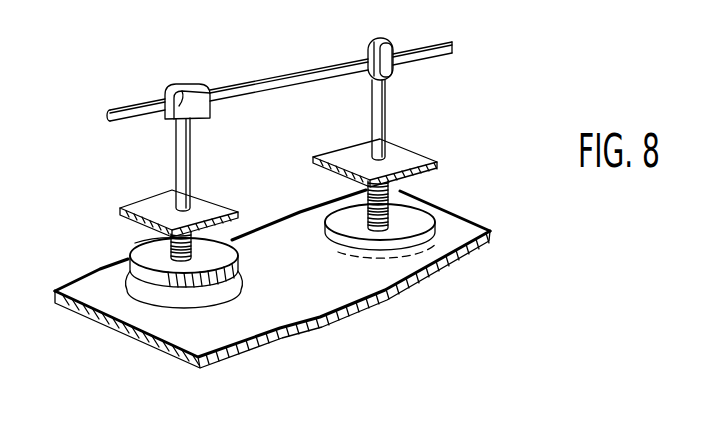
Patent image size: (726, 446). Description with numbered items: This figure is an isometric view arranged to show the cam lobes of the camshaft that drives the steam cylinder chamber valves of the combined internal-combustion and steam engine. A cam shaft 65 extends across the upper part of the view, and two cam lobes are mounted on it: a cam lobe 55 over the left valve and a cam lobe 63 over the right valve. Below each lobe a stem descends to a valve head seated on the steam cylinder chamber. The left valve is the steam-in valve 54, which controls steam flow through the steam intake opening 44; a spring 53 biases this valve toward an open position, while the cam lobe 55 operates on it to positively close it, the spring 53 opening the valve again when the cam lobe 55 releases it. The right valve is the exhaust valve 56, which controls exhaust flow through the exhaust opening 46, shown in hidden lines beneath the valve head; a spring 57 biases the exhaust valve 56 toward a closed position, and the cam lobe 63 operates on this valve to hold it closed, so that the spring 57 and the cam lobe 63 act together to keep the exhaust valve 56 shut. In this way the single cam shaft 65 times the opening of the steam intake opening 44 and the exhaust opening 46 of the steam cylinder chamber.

The steam intake opening 44 is at (222, 297).
The exhaust opening 46 is at (348, 253).
The spring 53 is at (139, 241).
The steam-in valve 54 is at (229, 257).
The cam lobe 55 is at (187, 92).
The exhaust valve 56 is at (338, 229).
The spring 57 is at (368, 189).
The cam lobe 63 is at (387, 37).
The cam shaft 65 is at (285, 63).